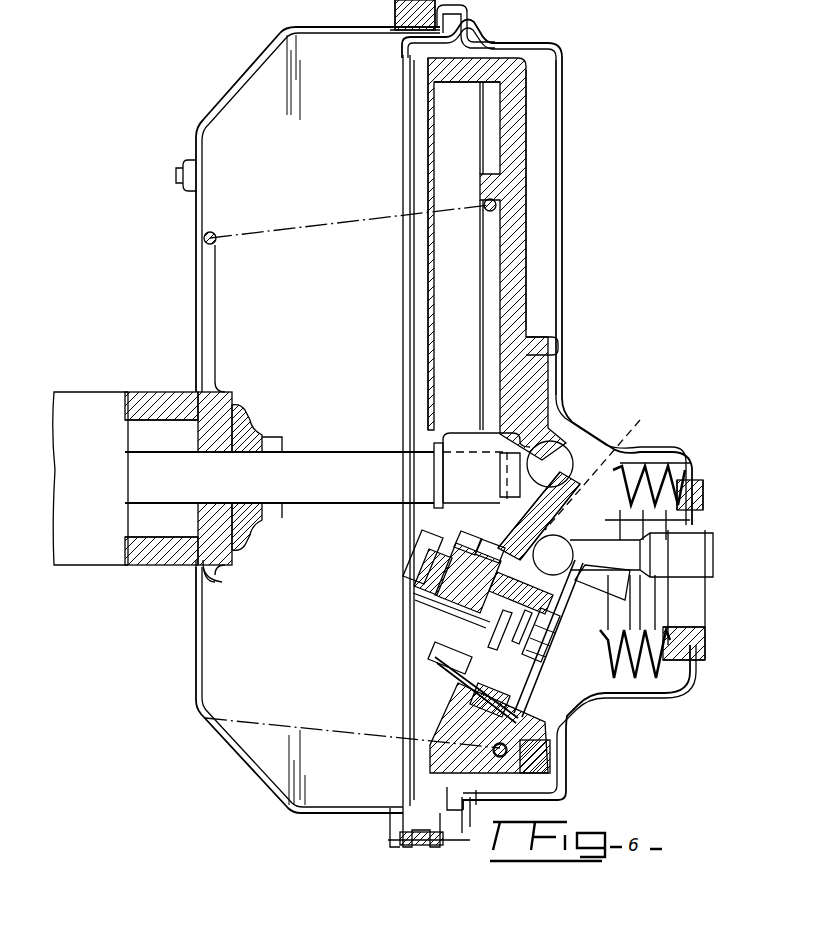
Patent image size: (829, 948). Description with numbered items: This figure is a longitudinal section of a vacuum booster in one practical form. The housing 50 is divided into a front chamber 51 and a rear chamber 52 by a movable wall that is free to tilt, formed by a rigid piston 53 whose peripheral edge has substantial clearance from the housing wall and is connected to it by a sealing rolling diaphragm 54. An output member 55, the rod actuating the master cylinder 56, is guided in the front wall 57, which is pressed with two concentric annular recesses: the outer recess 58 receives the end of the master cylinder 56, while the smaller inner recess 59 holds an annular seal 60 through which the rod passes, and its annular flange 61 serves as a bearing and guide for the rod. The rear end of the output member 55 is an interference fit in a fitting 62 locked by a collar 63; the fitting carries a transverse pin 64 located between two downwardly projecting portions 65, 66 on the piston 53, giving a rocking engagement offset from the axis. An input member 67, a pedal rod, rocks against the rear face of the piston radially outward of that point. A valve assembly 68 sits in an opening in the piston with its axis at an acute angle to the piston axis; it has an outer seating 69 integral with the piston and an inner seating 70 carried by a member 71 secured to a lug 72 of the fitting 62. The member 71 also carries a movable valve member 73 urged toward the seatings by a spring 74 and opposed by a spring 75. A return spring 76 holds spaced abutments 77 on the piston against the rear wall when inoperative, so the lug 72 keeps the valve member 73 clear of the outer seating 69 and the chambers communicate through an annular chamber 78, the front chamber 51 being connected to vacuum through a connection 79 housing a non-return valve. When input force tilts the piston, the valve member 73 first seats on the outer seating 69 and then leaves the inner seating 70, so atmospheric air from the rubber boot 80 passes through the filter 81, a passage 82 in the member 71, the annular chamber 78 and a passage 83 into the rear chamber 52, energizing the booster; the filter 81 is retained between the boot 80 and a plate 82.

The housing 50 is at (562, 110).
The front chamber 51 is at (326, 175).
The rear chamber 52 is at (548, 120).
The rigid piston 53 is at (525, 228).
The rolling diaphragm 54 is at (526, 190).
The output member 55 is at (328, 480).
The master cylinder 56 is at (92, 392).
The front wall 57 is at (196, 360).
The outer recess 58 is at (232, 392).
The inner recess 59 is at (252, 425).
The annular seal 60 is at (248, 555).
The annular flange 61 is at (280, 438).
The fitting 62 is at (462, 446).
The collar 63 is at (434, 460).
The transverse pin 64 is at (578, 442).
The downwardly projecting portion 65 is at (550, 445).
The downwardly projecting portion 66 is at (628, 452).
The input member 67 is at (690, 553).
The valve assembly 68 is at (430, 635).
The outer seating 69 is at (450, 670).
The inner seating 70 is at (500, 550).
The member 71 is at (416, 606).
The lug 72 is at (410, 553).
The movable valve member 73 is at (462, 550).
The spring 74 is at (435, 640).
The spring 75 is at (532, 664).
The return spring 76 is at (215, 243).
The abutment 77 is at (552, 345).
The annular chamber 78 is at (455, 690).
The connection 79 is at (183, 160).
The rubber boot 80 is at (705, 632).
The filter 81 is at (578, 656).
The passage 82 is at (670, 519).
The passage 83 is at (603, 465).